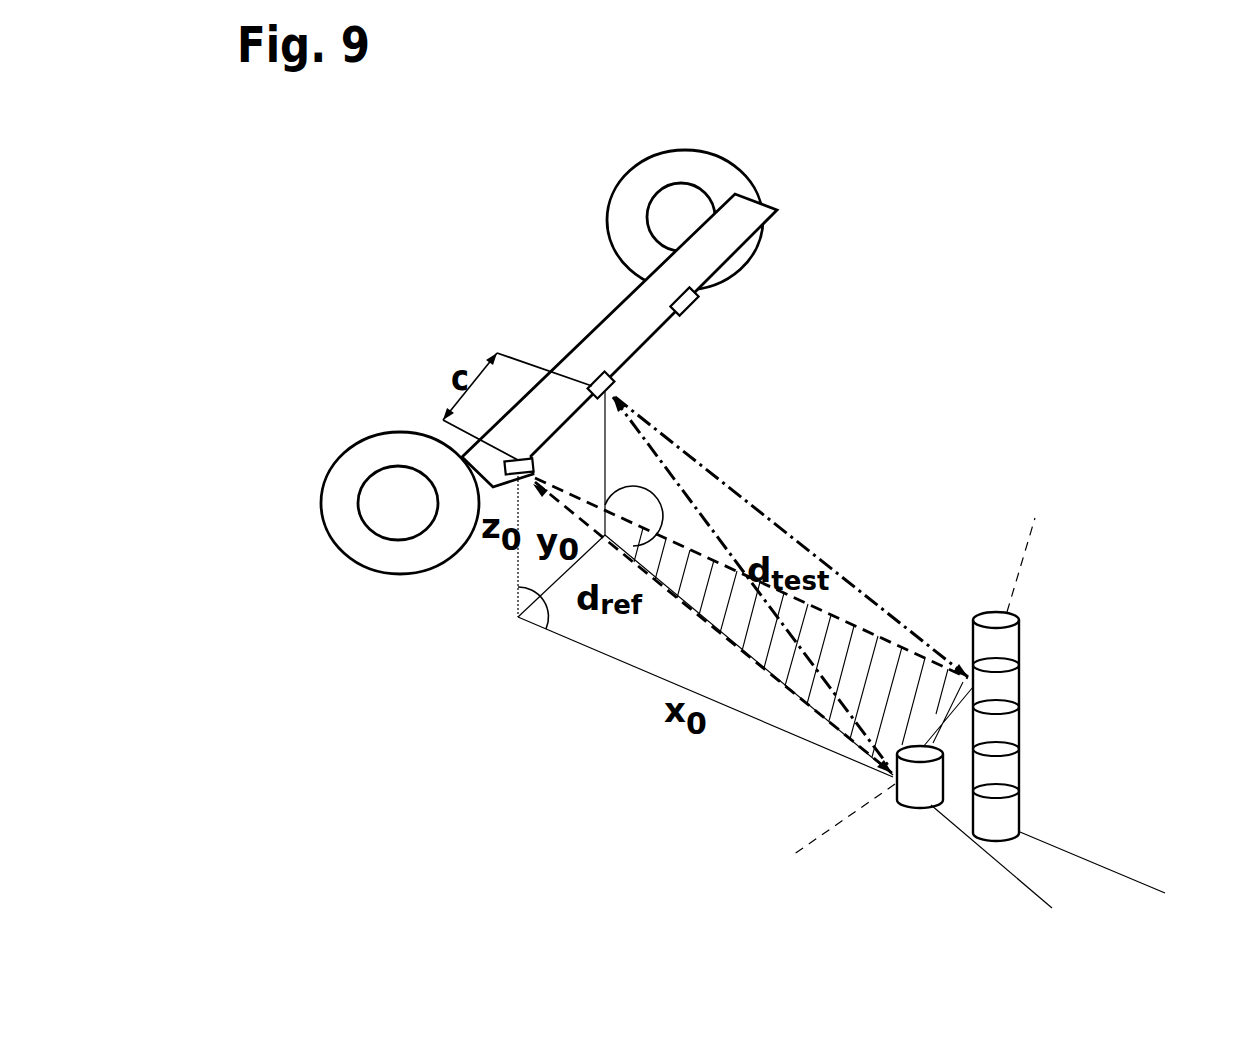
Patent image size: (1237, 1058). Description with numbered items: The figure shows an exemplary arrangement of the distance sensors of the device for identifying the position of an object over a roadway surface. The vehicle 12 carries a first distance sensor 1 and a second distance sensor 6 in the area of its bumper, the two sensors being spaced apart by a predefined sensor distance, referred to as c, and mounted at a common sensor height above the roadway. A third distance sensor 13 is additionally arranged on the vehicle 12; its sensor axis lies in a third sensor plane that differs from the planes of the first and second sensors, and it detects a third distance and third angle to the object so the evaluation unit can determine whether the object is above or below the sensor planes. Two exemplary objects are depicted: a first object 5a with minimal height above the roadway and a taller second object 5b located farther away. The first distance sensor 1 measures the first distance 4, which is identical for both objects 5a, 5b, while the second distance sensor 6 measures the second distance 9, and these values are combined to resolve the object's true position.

The vehicle 12 is at (582, 166).
The third distance sensor 13 is at (672, 298).
The second distance sensor 6 is at (592, 374).
The first distance sensor 1 is at (503, 465).
The second distance 9 is at (688, 487).
The first distance 4 is at (882, 606).
The first object 5a is at (913, 790).
The second object 5b is at (1003, 688).